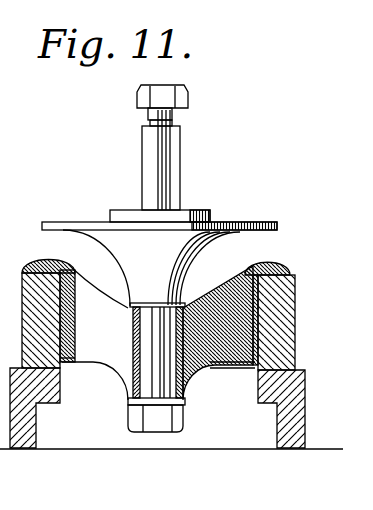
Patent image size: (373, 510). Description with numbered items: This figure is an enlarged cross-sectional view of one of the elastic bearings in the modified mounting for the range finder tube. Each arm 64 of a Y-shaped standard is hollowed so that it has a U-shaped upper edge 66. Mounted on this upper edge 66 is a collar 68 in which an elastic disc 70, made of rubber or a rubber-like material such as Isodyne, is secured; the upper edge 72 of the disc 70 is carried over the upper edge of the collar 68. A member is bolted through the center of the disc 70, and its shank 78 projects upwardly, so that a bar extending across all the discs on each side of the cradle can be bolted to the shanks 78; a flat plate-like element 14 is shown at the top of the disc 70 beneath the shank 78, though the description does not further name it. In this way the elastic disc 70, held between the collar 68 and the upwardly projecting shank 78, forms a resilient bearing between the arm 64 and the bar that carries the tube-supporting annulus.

The plate 14 is at (76, 208).
The arm 64 is at (292, 435).
The U-shaped upper edge 66 is at (297, 373).
The collar 68 is at (295, 317).
The elastic disc 70 is at (236, 290).
The upper edge of disc 72 is at (277, 262).
The shank 78 is at (166, 160).